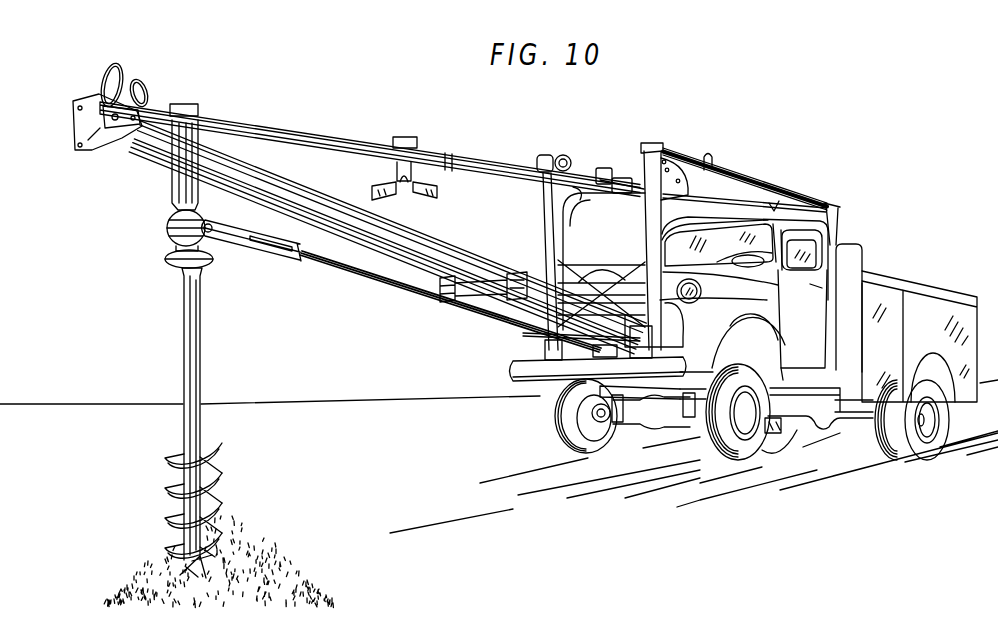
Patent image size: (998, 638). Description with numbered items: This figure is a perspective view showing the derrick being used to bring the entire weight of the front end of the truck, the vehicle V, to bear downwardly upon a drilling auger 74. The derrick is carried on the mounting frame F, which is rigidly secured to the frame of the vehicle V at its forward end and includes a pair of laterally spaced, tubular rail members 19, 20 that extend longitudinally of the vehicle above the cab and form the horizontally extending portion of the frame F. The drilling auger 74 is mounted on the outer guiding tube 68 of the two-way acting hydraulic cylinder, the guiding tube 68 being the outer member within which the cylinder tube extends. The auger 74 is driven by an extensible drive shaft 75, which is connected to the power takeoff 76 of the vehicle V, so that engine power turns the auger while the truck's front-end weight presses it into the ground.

The outer guiding tube 68 is at (320, 137).
The extensible drive shaft 75 is at (405, 295).
The drilling auger 74 is at (190, 355).
The power takeoff 76 is at (598, 361).
The rail member 19 is at (694, 215).
The rail member 20 is at (776, 198).
The mounting frame F is at (549, 238).
The vehicle V is at (898, 279).